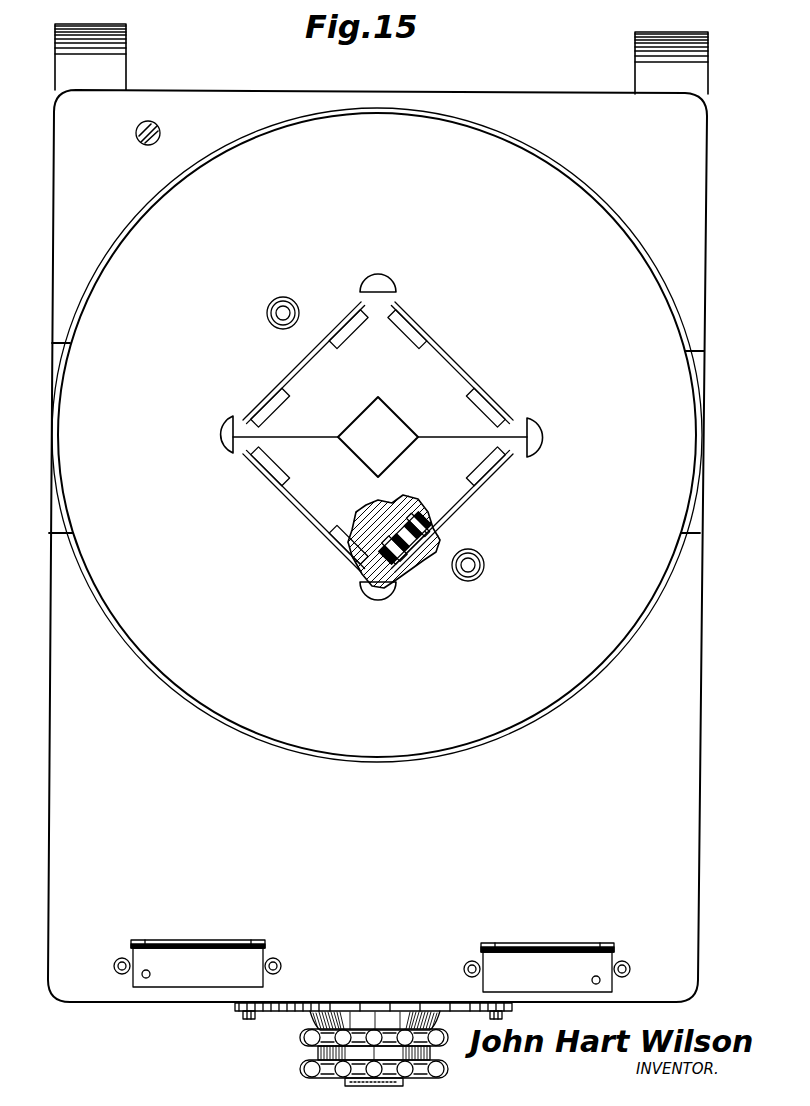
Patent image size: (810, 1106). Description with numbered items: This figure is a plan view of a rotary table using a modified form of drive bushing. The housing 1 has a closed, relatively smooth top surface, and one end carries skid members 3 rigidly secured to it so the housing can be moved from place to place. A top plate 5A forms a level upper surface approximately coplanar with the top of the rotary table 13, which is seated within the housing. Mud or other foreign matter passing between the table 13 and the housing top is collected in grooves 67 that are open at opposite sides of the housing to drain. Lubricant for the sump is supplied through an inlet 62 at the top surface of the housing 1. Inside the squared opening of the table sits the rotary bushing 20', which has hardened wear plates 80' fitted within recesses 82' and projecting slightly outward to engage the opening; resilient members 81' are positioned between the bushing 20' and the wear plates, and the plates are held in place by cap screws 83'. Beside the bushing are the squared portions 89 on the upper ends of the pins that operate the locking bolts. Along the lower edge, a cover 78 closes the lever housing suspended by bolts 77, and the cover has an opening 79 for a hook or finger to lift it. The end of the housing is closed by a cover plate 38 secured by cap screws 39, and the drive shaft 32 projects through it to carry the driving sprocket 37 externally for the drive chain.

The housing 1 is at (52, 193).
The skid members 3 is at (124, 75).
The top plate 5A is at (677, 218).
The rotary table 13 is at (696, 379).
The grooves 67 is at (56, 354).
The inlet 62 is at (152, 125).
The squared portion 89 is at (270, 318).
The rotary bushing 20' is at (380, 437).
The recesses 82' is at (452, 362).
The resilient members 81' is at (378, 472).
The hardened wear plates 80' is at (389, 441).
The cap screws 83' is at (402, 544).
The cover 78 is at (205, 978).
The bolts 77 is at (120, 976).
The opening 79 is at (145, 981).
The cover plate 38 is at (236, 1008).
The cap screws 39 is at (246, 1020).
The driving sprocket 37 is at (300, 1063).
The drive shaft 32 is at (376, 1086).